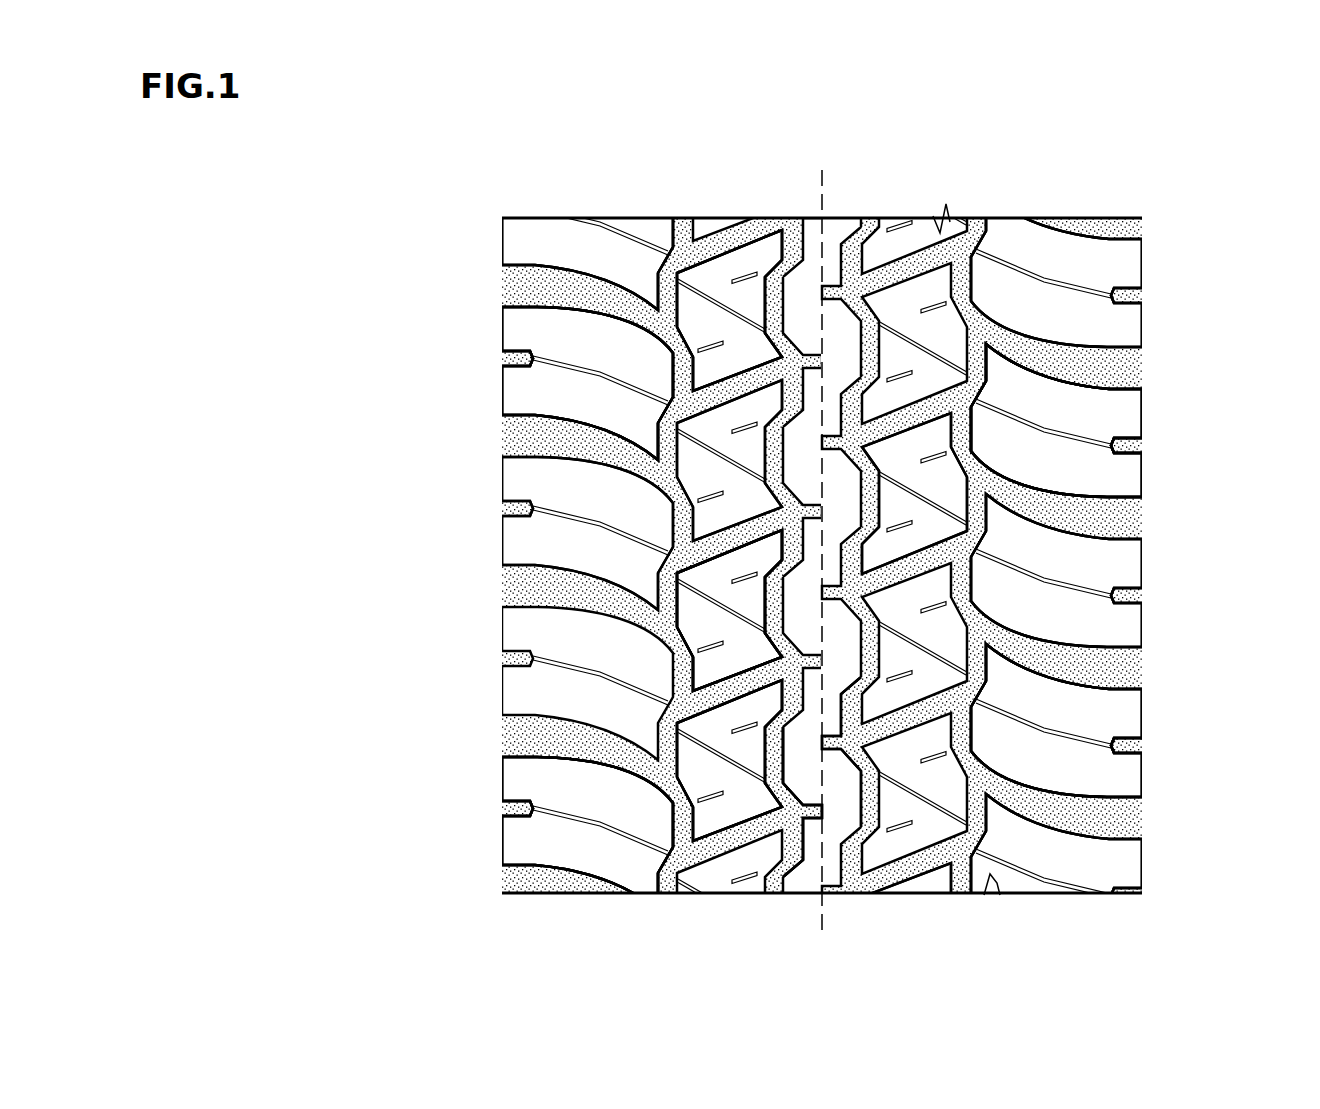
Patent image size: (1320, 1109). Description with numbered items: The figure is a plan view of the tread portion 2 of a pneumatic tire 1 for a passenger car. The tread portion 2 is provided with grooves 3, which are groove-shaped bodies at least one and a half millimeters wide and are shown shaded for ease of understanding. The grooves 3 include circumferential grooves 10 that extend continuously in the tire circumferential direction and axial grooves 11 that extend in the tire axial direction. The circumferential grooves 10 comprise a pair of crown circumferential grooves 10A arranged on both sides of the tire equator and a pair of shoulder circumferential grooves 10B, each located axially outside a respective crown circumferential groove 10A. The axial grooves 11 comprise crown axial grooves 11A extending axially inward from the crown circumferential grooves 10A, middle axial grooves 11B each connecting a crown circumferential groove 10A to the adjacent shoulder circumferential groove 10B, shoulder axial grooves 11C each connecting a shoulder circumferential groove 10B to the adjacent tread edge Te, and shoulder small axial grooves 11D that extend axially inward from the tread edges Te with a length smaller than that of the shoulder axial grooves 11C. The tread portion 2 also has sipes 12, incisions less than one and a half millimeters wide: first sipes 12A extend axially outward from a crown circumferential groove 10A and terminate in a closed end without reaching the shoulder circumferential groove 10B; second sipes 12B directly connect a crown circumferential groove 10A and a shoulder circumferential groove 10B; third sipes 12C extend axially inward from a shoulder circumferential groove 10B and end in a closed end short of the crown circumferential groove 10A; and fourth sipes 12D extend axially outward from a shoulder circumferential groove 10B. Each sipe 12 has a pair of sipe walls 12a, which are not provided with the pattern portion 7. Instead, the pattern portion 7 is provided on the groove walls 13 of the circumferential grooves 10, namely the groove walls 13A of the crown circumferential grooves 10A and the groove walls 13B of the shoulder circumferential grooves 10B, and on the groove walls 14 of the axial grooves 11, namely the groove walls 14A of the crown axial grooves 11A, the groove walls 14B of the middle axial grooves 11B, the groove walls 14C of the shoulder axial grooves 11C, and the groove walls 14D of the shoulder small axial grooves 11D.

The tire 1 is at (1157, 178).
The tread portion 2 is at (1090, 198).
The grooves 3 is at (587, 298).
The pattern portion 7 is at (1065, 645).
The circumferential grooves 10 is at (890, 350).
The crown circumferential grooves 10A is at (792, 840).
The shoulder circumferential grooves 10B is at (685, 828).
The axial grooves 11 is at (1085, 355).
The crown axial grooves 11A is at (833, 740).
The middle axial grooves 11B is at (925, 865).
The shoulder axial grooves 11C is at (1075, 506).
The shoulder small axial grooves 11D is at (1070, 585).
The sipes 12 is at (1078, 720).
The sipe walls 12a is at (1085, 440).
The first sipes 12A is at (748, 278).
The second sipes 12B is at (708, 292).
The third sipes 12C is at (655, 315).
The fourth sipes 12D is at (612, 398).
The groove walls of the circumferential grooves 13 is at (785, 460).
The groove walls of the crown circumferential grooves 13A is at (765, 628).
The groove walls of the shoulder circumferential grooves 13B is at (675, 700).
The groove walls of the axial grooves 14 is at (1090, 800).
The groove walls of the crown axial grooves 14A is at (812, 828).
The groove walls of the middle axial grooves 14B is at (718, 700).
The groove walls of the shoulder axial grooves 14C is at (545, 755).
The groove walls of the shoulder small axial grooves 14D is at (512, 800).
The tread edges Te is at (500, 248).